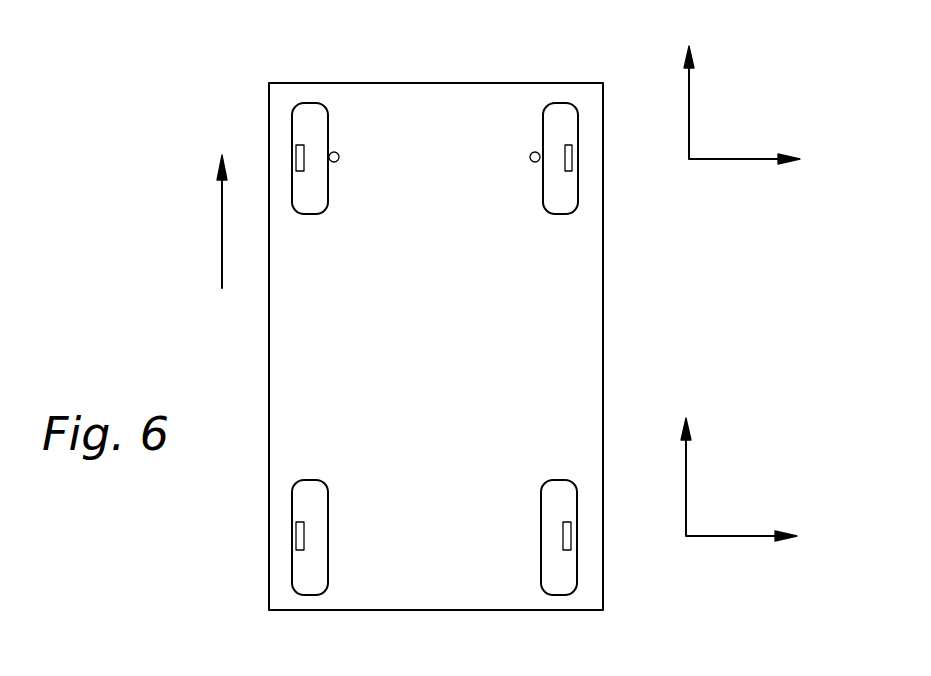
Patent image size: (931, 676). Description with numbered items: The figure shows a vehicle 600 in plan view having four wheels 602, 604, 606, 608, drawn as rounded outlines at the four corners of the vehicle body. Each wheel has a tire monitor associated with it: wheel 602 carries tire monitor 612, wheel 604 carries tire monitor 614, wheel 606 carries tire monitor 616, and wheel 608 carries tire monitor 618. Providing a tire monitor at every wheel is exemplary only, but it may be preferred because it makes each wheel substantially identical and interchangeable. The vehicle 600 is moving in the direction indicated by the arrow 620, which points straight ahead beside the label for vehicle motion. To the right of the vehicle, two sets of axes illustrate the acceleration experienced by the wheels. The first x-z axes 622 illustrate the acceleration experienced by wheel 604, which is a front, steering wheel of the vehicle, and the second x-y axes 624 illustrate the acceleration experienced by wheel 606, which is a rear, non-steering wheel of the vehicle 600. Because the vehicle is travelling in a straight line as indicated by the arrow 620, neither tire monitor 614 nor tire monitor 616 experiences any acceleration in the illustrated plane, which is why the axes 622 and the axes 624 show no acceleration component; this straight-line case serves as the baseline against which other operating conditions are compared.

The vehicle 600 is at (271, 612).
The wheel 602 is at (322, 214).
The wheel 604 is at (555, 214).
The wheel 606 is at (558, 480).
The wheel 608 is at (327, 590).
The tire monitor 612 is at (304, 152).
The tire monitor 614 is at (565, 152).
The tire monitor 616 is at (563, 535).
The tire monitor 618 is at (304, 535).
The arrow 620 is at (222, 275).
The first x-z axes 622 is at (768, 160).
The second x-y axes 624 is at (740, 537).